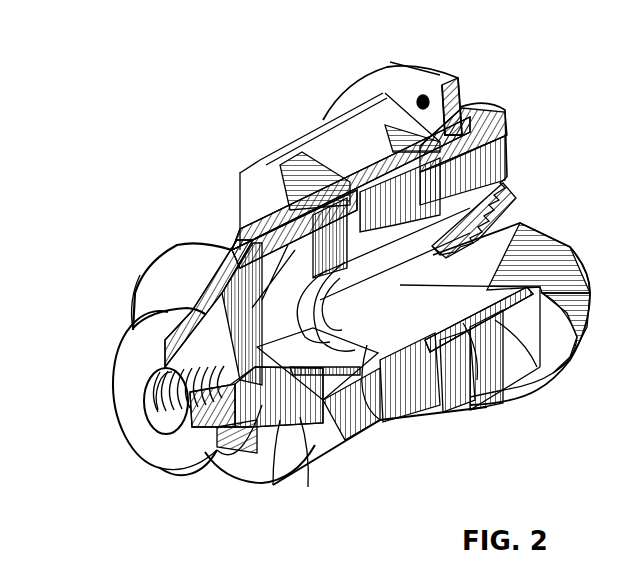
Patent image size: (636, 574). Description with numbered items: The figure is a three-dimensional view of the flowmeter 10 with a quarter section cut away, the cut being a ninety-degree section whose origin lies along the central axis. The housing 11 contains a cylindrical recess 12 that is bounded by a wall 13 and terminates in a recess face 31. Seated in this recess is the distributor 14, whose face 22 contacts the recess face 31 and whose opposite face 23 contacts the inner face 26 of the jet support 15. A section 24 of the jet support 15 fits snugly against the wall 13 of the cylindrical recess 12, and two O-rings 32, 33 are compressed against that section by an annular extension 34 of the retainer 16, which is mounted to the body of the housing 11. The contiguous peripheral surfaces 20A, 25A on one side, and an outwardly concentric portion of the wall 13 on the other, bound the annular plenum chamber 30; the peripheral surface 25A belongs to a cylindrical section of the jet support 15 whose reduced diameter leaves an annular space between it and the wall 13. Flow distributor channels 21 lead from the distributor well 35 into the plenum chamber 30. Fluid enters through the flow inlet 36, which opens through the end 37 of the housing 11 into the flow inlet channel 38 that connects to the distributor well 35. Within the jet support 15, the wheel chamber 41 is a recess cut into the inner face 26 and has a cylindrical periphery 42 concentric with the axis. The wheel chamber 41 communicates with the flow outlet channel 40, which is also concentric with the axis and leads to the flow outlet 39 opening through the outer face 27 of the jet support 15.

The flowmeter 10 is at (96, 401).
The housing 11 is at (192, 237).
The cylindrical recess 12 is at (347, 363).
The wall 13 is at (443, 395).
The distributor 14 is at (253, 227).
The jet support 15 is at (490, 253).
The retainer 16 is at (438, 77).
The peripheral surface 20A is at (265, 212).
The flow distributor channels 21 is at (318, 430).
The face 22 is at (230, 290).
The face 23 is at (367, 347).
The section 24 is at (440, 340).
The peripheral surface 25A is at (307, 203).
The inner face 26 is at (380, 413).
The outer face 27 is at (509, 160).
The annular plenum chamber 30 is at (268, 192).
The recess face 31 is at (270, 437).
The O-ring 32 is at (495, 323).
The O-ring 33 is at (545, 350).
The annular extension 34 is at (403, 160).
The distributor well 35 is at (257, 420).
The flow inlet 36 is at (156, 398).
The end 37 is at (125, 365).
The flow inlet channel 38 is at (215, 440).
The flow outlet 39 is at (497, 183).
The flow outlet channel 40 is at (391, 254).
The wheel chamber 41 is at (331, 306).
The cylindrical periphery 42 is at (362, 340).